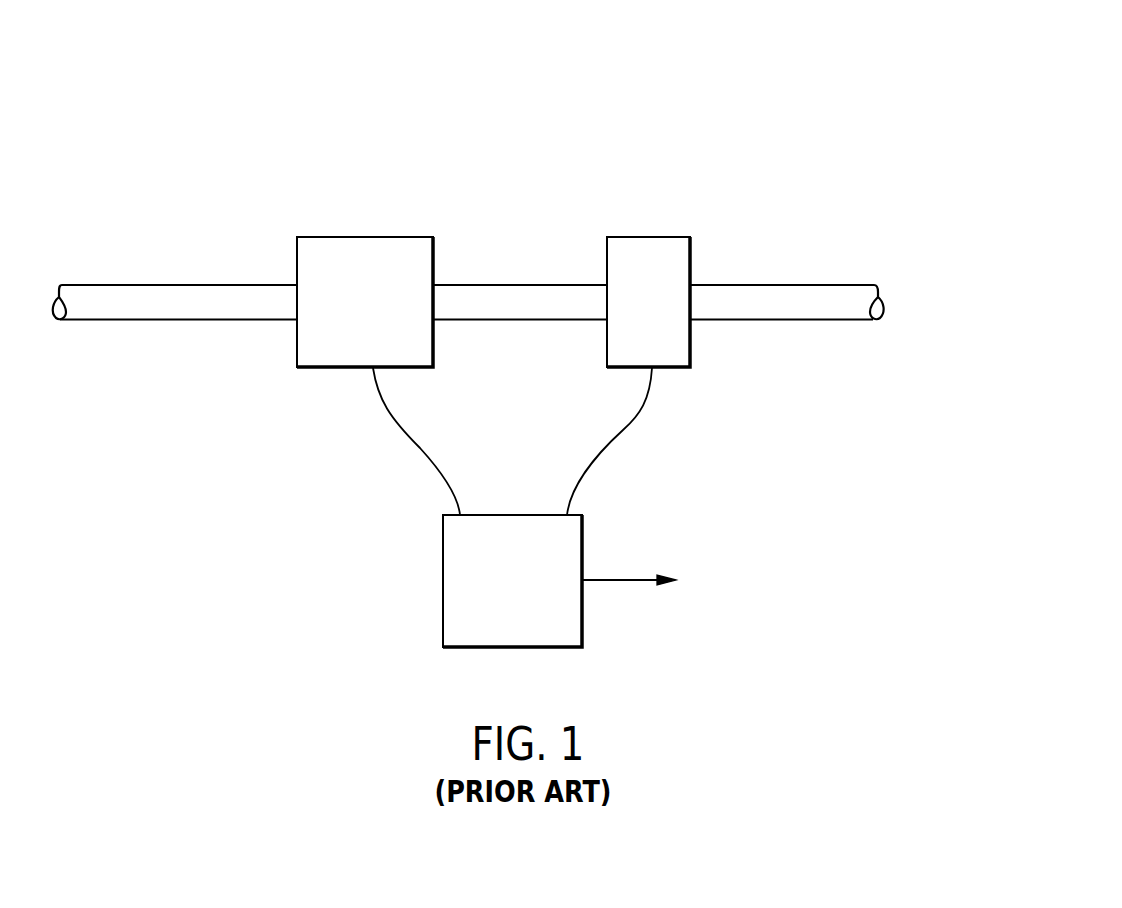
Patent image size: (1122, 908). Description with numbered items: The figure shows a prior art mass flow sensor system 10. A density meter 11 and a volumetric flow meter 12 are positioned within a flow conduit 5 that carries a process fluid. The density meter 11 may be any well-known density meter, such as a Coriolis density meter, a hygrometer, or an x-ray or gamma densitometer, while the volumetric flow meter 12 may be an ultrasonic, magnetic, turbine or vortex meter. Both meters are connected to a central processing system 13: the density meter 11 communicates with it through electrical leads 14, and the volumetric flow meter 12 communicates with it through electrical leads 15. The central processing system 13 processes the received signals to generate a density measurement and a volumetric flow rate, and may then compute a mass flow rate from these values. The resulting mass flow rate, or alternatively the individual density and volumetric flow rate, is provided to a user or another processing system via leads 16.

The flow conduit 5 is at (197, 285).
The prior art mass flow sensor system 10 is at (725, 103).
The density meter 11 is at (355, 310).
The volumetric flow meter 12 is at (636, 310).
The central processing system 13 is at (501, 592).
The electrical leads 14 is at (418, 448).
The electrical leads 15 is at (623, 430).
The leads 16 is at (642, 578).